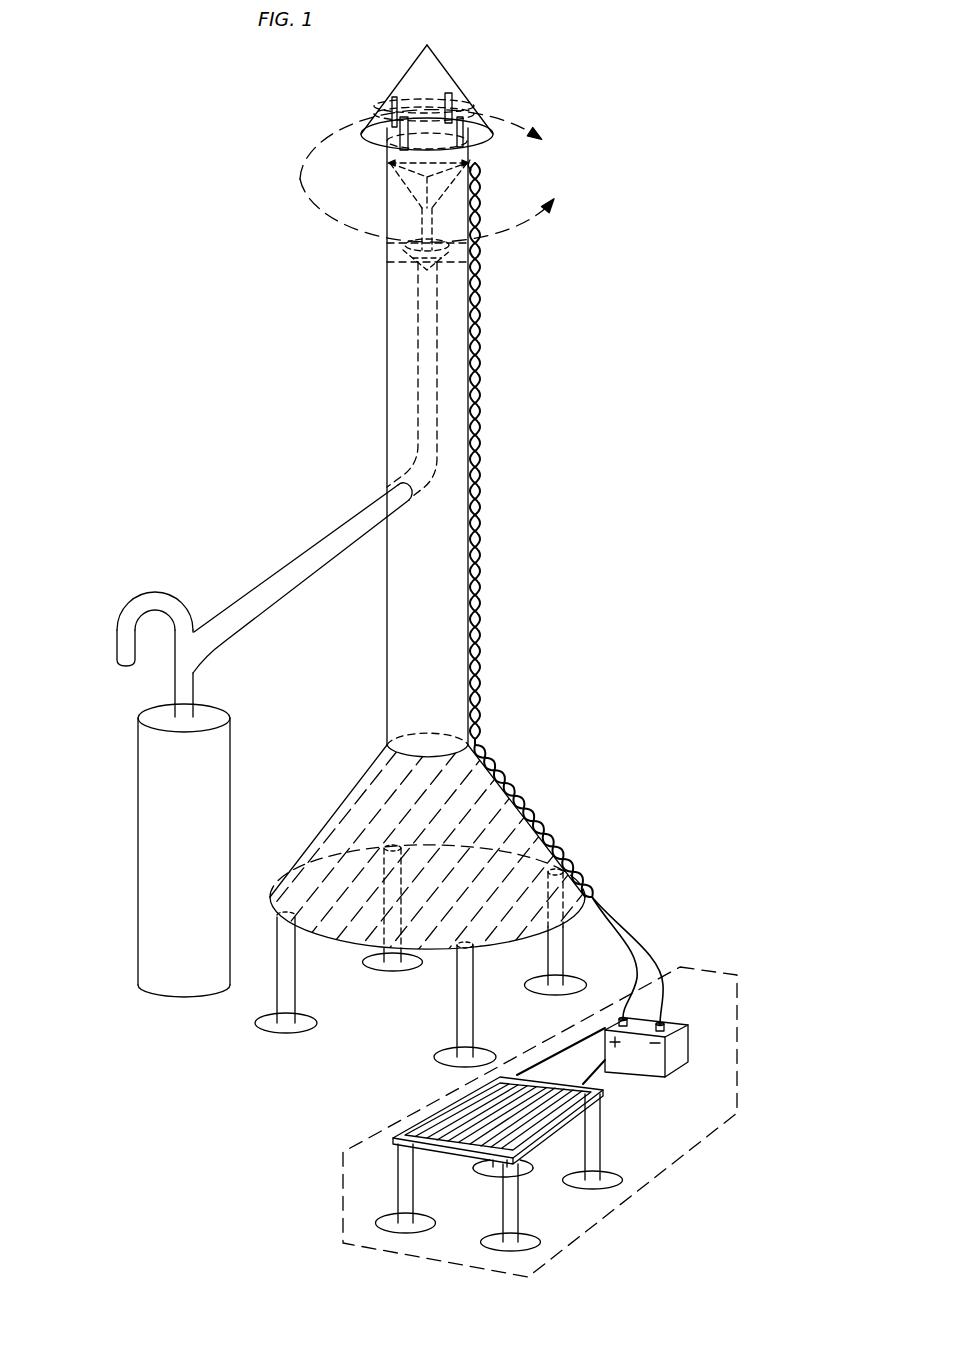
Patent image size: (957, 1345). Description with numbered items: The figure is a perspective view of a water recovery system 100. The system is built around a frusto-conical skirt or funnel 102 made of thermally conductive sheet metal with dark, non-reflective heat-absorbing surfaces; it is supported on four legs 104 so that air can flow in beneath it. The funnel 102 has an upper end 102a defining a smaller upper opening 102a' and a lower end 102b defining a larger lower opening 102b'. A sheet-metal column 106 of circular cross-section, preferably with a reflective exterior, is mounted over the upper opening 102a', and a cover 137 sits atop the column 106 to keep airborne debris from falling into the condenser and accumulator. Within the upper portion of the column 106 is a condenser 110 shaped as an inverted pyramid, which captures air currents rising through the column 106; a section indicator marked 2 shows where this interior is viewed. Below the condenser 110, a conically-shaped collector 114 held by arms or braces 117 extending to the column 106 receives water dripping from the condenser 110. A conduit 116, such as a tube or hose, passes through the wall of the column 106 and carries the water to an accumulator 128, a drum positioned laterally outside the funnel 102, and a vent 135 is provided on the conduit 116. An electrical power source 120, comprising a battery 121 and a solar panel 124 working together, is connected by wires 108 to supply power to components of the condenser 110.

The water recovery system 100 is at (322, 98).
The cover 137 is at (432, 62).
The column 106 is at (387, 390).
The section view indicator 2 is at (429, 176).
The condenser 110 is at (386, 188).
The collector 114 is at (405, 265).
The conduit 116 is at (418, 310).
The arms or braces 117 is at (480, 284).
The wires 108 is at (481, 238).
The vent 135 is at (120, 642).
The accumulator 128 is at (223, 743).
The funnel 102 is at (350, 793).
The upper end 102a is at (395, 729).
The upper opening 102a' is at (425, 707).
The lower end 102b is at (427, 963).
The lower opening 102b' is at (427, 928).
The legs 104 is at (280, 993).
The electrical power source 120 is at (738, 1002).
The battery 121 is at (680, 1062).
The solar panel 124 is at (605, 1092).